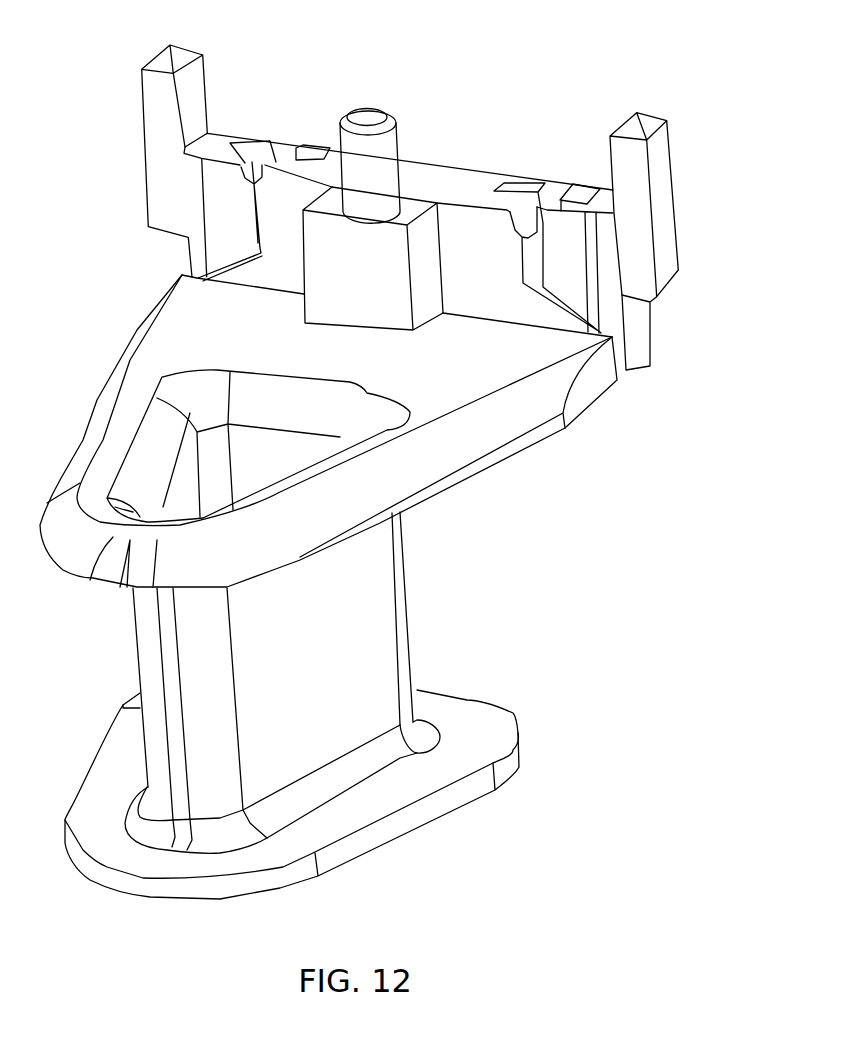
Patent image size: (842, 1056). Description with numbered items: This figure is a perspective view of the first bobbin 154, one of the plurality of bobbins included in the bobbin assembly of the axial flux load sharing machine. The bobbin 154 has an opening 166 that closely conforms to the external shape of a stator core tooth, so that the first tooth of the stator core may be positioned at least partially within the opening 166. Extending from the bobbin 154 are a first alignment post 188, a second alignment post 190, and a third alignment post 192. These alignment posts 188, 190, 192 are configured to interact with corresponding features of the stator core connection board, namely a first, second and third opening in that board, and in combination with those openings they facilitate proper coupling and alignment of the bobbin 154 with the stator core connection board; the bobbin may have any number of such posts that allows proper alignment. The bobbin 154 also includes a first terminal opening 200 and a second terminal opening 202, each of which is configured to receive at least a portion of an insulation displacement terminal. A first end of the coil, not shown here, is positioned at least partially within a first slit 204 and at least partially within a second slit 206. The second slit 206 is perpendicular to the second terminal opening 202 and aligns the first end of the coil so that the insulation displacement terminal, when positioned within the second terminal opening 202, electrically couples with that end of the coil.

The first bobbin 154 is at (393, 454).
The opening 166 is at (248, 450).
The first alignment post 188 is at (203, 61).
The second alignment post 190 is at (398, 133).
The third alignment post 192 is at (675, 145).
The first terminal opening 200 is at (281, 156).
The second terminal opening 202 is at (551, 187).
The first slit 204 is at (622, 348).
The second slit 206 is at (563, 190).